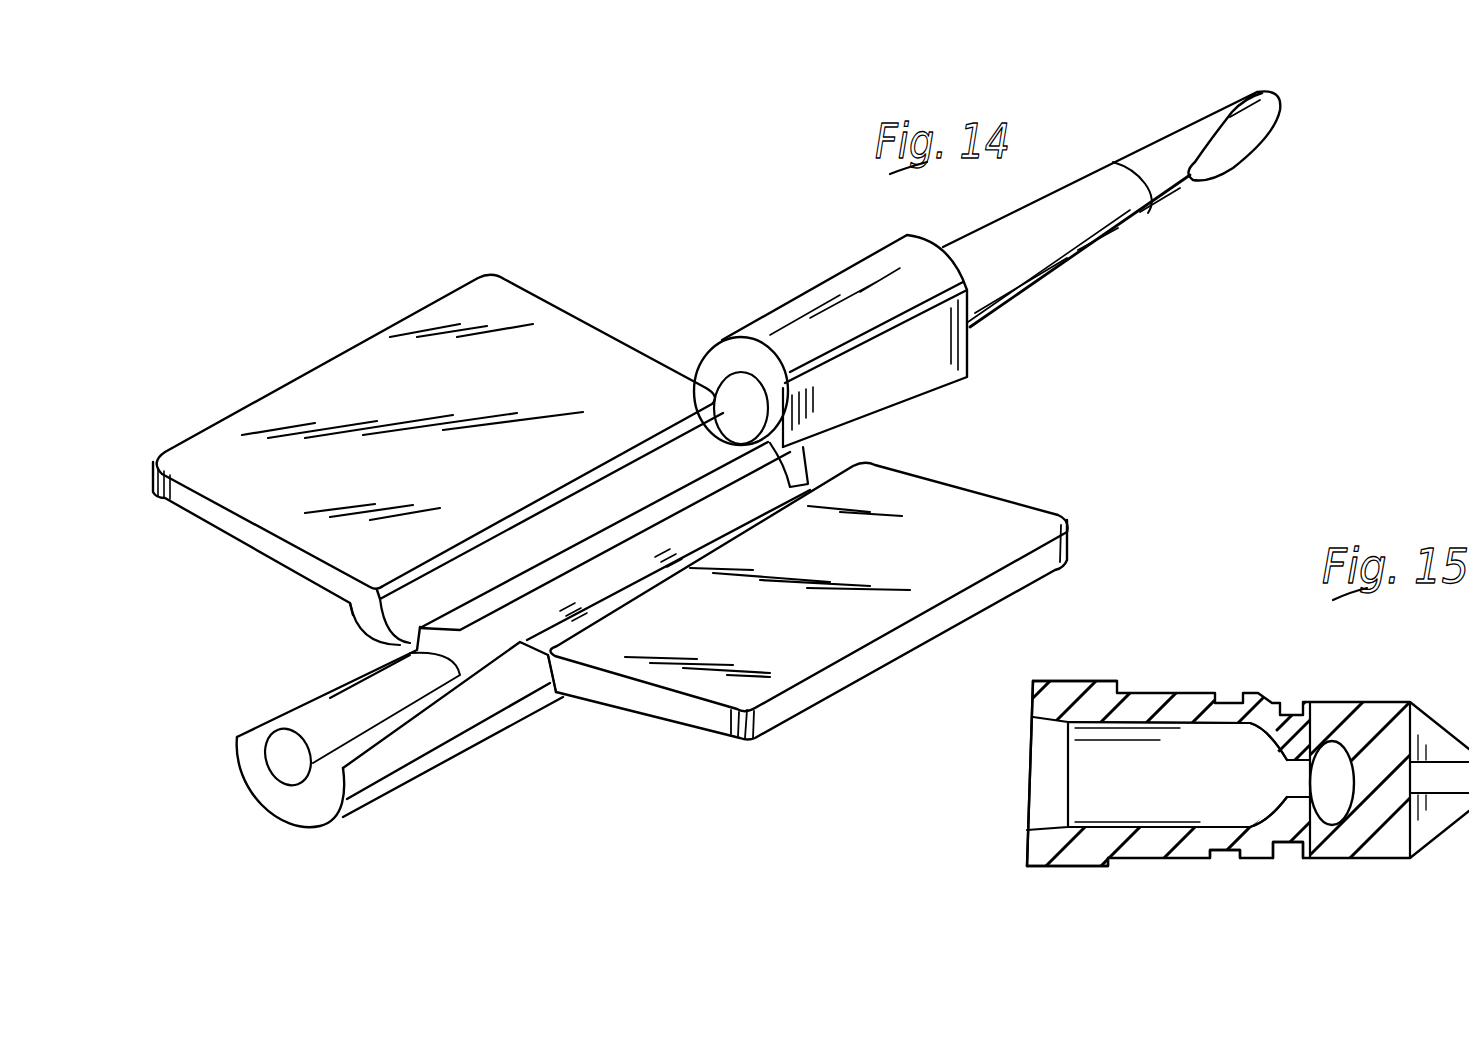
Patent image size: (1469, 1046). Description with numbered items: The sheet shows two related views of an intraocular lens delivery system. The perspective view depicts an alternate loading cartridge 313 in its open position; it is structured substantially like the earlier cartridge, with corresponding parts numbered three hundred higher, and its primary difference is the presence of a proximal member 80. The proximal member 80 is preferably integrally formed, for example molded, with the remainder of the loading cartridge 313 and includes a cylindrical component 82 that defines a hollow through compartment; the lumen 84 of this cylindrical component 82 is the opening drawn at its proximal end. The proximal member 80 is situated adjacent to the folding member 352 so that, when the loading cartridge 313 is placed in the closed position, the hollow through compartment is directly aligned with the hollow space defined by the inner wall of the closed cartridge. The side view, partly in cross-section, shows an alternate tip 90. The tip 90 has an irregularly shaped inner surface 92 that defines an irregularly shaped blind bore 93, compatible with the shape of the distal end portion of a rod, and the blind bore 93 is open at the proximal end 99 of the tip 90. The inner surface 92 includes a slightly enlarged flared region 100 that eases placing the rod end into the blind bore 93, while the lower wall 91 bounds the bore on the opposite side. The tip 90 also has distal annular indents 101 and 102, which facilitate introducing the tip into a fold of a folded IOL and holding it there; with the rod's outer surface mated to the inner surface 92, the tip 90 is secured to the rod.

In FIG. 14, the loading cartridge 313 is at (671, 283).
In FIG. 14, the folding member 352 is at (790, 487).
In FIG. 14, the proximal member 80 is at (470, 769).
In FIG. 14, the cylindrical component 82 is at (337, 705).
In FIG. 14, the lumen 84 is at (287, 762).
In FIG. 15, the tip 90 is at (1262, 665).
In FIG. 15, the flared region 100 is at (1030, 738).
In FIG. 15, the proximal end 99 is at (1027, 793).
In FIG. 15, the blind bore 93 is at (1145, 797).
In FIG. 15, the inner surface 92 is at (1220, 728).
In FIG. 15, the lower wall 91 is at (1043, 855).
In FIG. 15, the distal annular indent 101 is at (1230, 857).
In FIG. 15, the distal annular indent 102 is at (1293, 840).